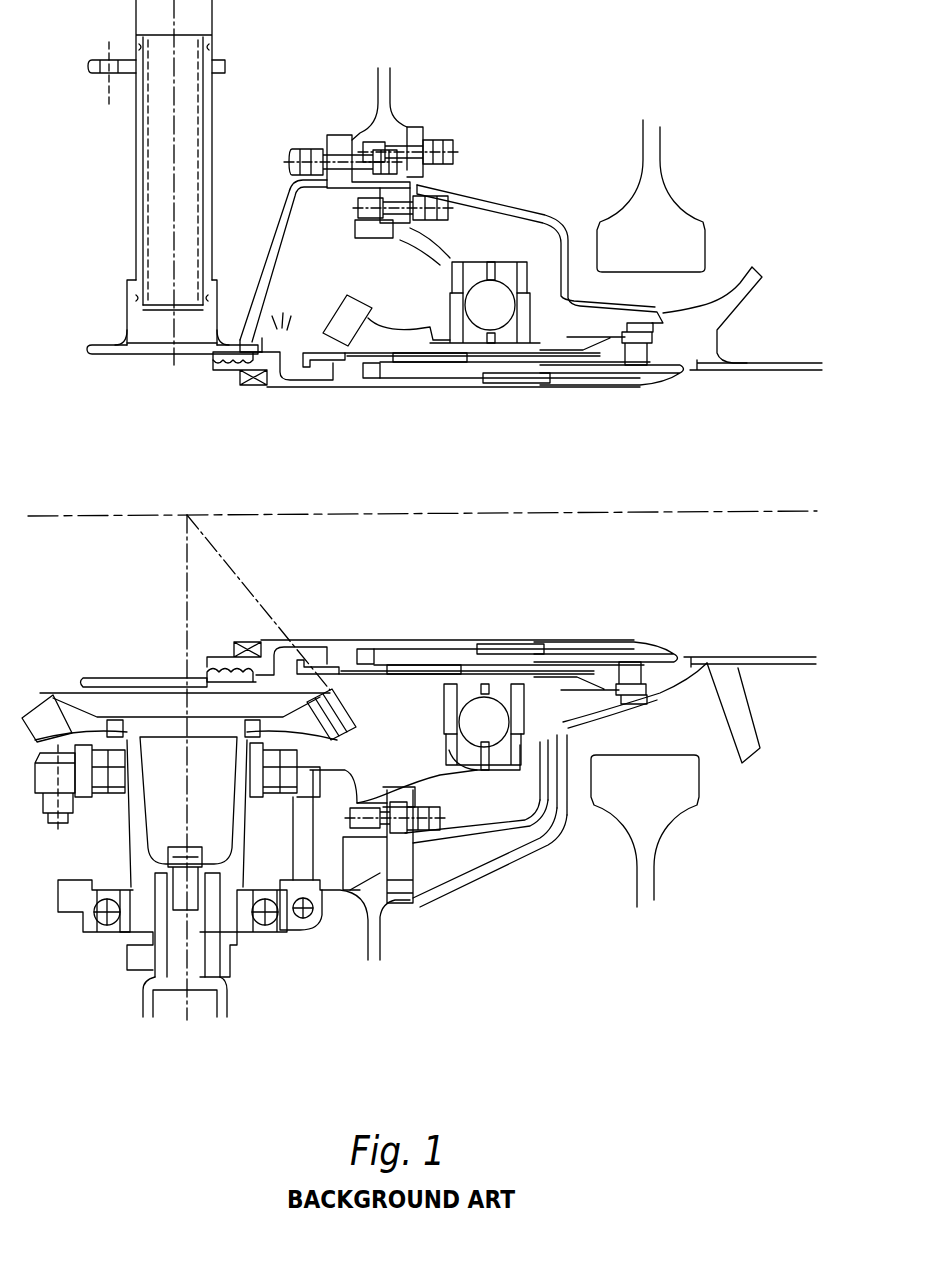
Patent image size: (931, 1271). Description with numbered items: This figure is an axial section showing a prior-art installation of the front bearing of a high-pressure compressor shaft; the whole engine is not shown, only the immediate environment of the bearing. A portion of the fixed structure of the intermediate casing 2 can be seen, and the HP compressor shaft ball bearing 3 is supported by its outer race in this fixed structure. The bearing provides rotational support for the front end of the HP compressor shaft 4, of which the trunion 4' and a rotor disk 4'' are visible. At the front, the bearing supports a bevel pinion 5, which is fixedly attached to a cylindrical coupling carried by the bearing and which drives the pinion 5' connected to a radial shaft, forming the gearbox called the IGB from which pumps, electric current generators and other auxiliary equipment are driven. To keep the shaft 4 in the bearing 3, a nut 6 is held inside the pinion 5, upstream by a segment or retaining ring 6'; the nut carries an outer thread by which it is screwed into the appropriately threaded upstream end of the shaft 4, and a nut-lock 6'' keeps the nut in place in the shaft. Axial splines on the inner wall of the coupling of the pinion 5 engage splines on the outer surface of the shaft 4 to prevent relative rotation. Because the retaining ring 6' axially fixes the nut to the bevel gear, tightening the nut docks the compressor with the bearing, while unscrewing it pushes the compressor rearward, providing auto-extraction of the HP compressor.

The intermediate casing 2 is at (391, 107).
The HP compressor shaft ball bearing 3 is at (516, 233).
The HP compressor shaft 4 is at (753, 381).
The trunion 4' is at (732, 315).
The rotor disk 4'' is at (679, 196).
The bevel pinion 5 is at (360, 515).
The pinion 5' is at (178, 847).
The nut 6 is at (426, 388).
The retaining ring 6' is at (497, 388).
The nut-lock 6'' is at (612, 373).